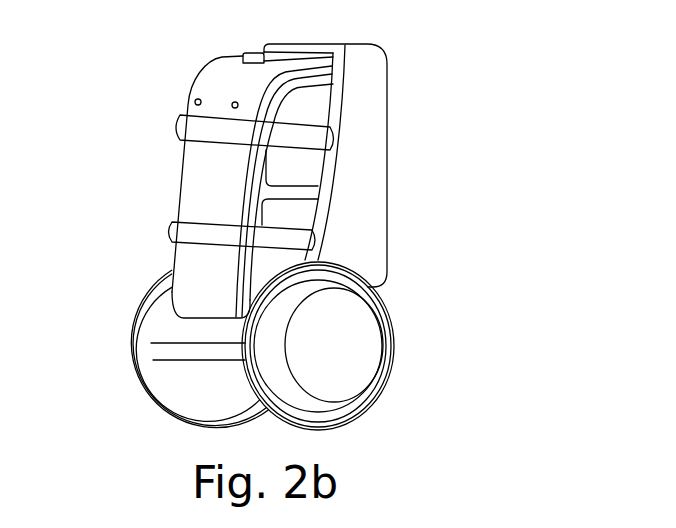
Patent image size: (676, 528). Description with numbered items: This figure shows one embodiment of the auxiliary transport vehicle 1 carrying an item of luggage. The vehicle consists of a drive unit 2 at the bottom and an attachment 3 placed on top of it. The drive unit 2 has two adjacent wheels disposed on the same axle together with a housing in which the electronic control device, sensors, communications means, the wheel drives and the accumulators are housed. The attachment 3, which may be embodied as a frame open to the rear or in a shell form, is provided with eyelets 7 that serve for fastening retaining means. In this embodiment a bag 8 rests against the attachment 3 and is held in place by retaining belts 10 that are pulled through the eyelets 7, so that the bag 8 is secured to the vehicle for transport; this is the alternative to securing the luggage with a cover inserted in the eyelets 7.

The auxiliary transport vehicle 1 is at (505, 68).
The drive unit 2 is at (432, 330).
The attachment 3 is at (376, 98).
The eyelets 7 is at (325, 140).
The bag 8 is at (185, 100).
The retaining belts 10 is at (178, 128).